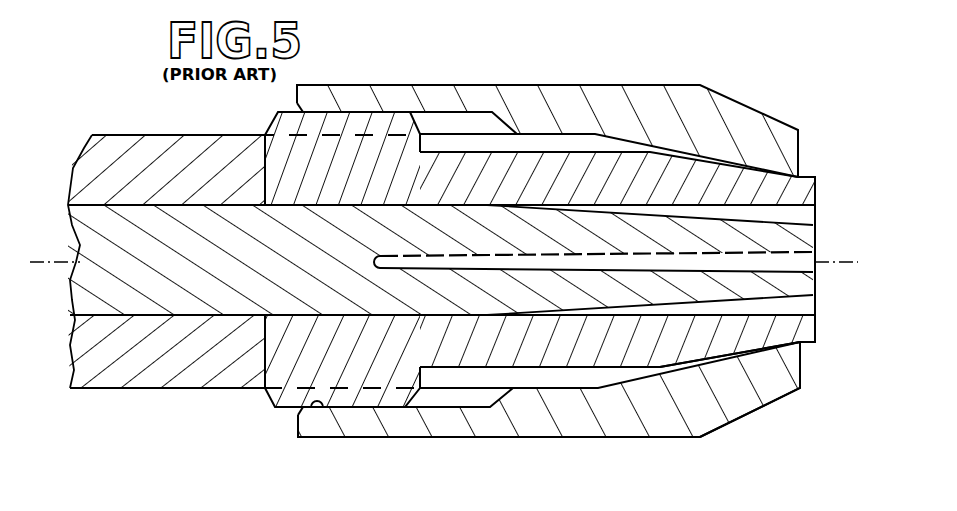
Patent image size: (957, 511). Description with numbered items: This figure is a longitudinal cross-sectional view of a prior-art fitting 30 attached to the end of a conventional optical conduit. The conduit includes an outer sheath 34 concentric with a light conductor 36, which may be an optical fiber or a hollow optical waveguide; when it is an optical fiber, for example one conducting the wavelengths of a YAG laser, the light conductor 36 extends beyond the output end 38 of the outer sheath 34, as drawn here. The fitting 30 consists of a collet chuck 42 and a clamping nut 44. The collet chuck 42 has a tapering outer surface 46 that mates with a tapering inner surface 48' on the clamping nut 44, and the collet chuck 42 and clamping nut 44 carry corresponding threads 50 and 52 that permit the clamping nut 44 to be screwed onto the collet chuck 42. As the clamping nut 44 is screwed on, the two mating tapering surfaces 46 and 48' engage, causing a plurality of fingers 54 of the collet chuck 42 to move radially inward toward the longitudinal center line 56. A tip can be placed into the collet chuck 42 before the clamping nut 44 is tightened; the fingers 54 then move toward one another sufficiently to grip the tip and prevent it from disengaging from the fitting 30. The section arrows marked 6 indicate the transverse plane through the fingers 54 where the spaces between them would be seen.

The fitting 30 is at (478, 444).
The outer sheath 34 is at (190, 373).
The light conductor 36 is at (250, 307).
The output end 38 is at (270, 356).
The collet chuck 42 is at (610, 345).
The clamping nut 44 is at (684, 418).
The tapering outer surface 46 is at (766, 330).
The collet tapered surface 48' is at (730, 421).
The threads 50 is at (403, 410).
The threads 52 is at (330, 408).
The fingers 54 is at (797, 205).
The longitudinal center line 56 is at (818, 256).
The section line 6- 6 is at (843, 49).